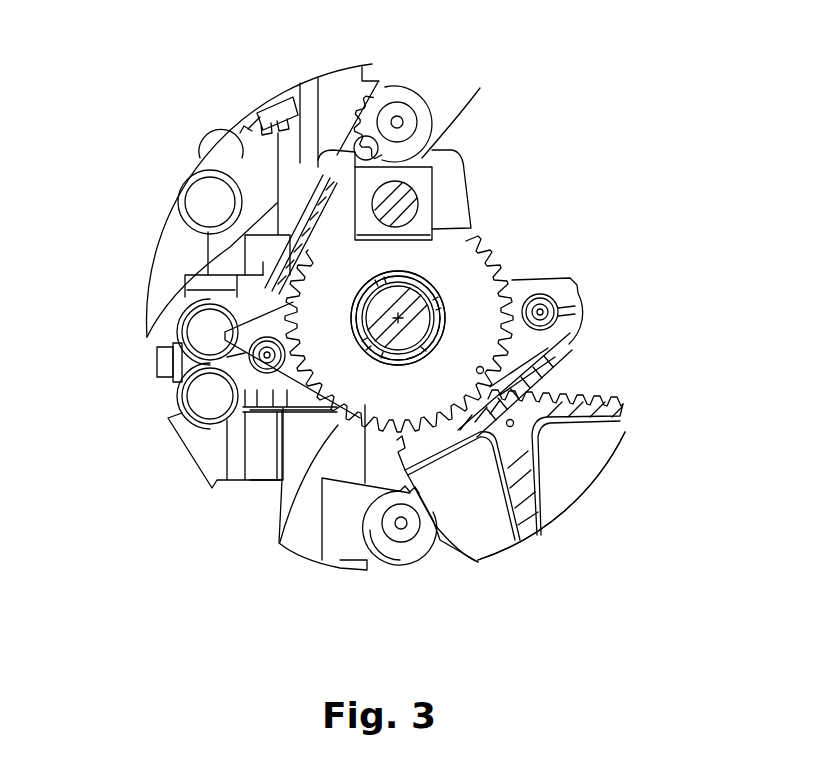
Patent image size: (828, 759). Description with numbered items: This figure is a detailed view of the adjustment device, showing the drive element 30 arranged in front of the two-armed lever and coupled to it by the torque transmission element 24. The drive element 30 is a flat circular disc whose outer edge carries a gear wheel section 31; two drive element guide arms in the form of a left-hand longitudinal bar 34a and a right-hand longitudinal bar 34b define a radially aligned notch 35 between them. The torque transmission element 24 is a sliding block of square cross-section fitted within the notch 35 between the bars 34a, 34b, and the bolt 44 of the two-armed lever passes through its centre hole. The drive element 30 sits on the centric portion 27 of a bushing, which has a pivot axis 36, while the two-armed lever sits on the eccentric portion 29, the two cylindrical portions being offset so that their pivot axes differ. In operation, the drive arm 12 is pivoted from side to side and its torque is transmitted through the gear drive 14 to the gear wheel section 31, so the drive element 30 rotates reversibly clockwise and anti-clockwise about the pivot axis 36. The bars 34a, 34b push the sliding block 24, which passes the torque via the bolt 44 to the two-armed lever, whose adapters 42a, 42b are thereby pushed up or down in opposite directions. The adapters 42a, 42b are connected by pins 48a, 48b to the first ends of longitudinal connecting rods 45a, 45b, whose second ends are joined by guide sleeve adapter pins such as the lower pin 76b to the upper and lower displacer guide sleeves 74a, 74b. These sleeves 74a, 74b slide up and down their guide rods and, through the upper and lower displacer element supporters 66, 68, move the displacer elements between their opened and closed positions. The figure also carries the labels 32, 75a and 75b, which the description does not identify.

The drive arm 12 is at (572, 493).
The gear drive 14 is at (683, 413).
The torque transmission element 24 is at (422, 193).
The centric portion 27 is at (382, 306).
The eccentric portion 29 is at (381, 354).
The drive element 30 is at (598, 207).
The gear wheel section 31 is at (511, 291).
The housing block 32 is at (433, 230).
The left-hand longitudinal bar 34a is at (325, 168).
The right-hand longitudinal bar 34b is at (443, 158).
The notch 35 is at (518, 99).
The pivot axis 36 is at (441, 294).
The two-armed lever adapter 42a is at (258, 392).
The two-armed lever adapter 42b is at (560, 327).
The bolt 44 is at (397, 210).
The longitudinal connecting rod 45a is at (325, 205).
The longitudinal connecting rod 45b is at (530, 375).
The pin 48a is at (248, 355).
The pin 48b is at (572, 310).
The upper displacer element supporter 66 is at (158, 252).
The lower displacer element supporter 68 is at (180, 440).
The upper displacer guide sleeve 74a is at (303, 93).
The lower displacer guide sleeve 74b is at (300, 542).
The pinion 75a is at (338, 96).
The pinion 75b is at (350, 553).
The lower guide sleeve adapter pin 76b is at (402, 524).